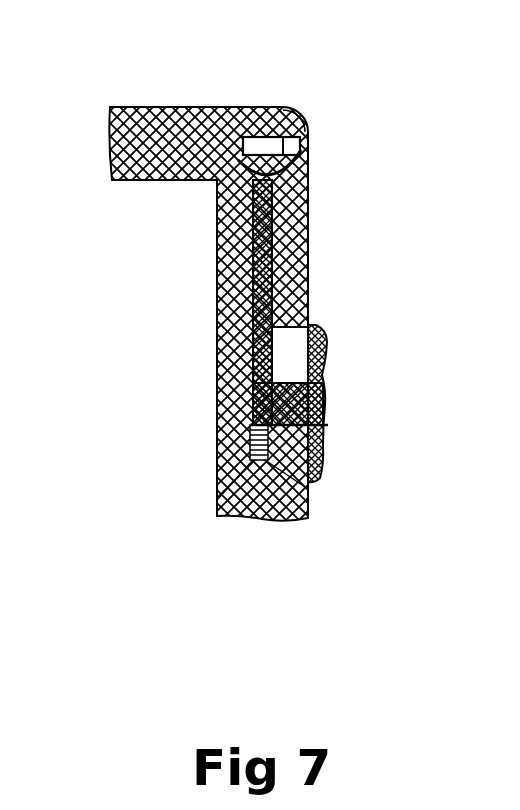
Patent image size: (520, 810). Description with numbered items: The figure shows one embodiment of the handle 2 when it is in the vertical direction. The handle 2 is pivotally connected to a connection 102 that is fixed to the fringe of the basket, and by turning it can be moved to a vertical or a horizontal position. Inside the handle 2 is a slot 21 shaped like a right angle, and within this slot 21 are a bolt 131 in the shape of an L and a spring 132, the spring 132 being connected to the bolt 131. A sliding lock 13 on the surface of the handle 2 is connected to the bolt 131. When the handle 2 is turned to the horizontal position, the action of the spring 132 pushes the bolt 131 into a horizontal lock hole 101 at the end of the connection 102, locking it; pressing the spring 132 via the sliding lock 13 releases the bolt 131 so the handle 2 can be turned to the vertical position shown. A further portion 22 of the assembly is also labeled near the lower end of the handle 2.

The handle 2 is at (310, 213).
The horizontal lock hole 101 is at (308, 131).
The connection 102 is at (165, 183).
The sliding lock 13 is at (328, 400).
The slot 21 is at (287, 358).
The engaging portion 22 is at (265, 460).
The bolt 131 is at (250, 427).
The spring 132 is at (253, 461).